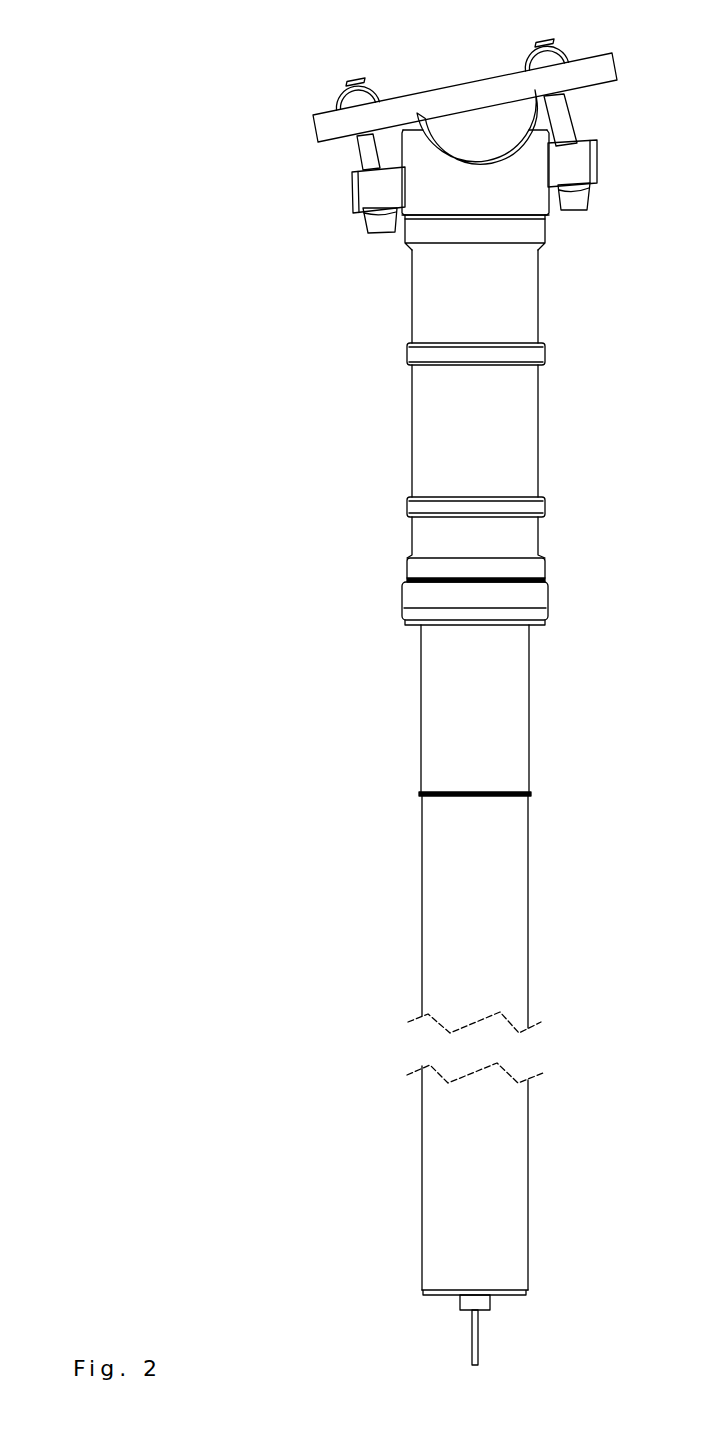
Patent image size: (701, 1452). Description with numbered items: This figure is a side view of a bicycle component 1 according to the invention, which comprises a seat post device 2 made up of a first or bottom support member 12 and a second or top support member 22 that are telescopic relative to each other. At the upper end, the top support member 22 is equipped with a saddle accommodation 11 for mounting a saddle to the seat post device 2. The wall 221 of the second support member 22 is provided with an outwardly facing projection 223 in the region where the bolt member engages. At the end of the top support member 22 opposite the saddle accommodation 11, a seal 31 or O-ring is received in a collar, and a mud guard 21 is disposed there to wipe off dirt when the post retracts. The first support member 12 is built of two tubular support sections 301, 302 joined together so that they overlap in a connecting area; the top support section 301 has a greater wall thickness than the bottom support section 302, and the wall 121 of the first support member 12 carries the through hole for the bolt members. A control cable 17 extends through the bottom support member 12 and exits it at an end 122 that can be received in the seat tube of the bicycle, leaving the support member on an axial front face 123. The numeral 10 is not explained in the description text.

The bicycle component 1 is at (112, 42).
The seat post device 2 is at (138, 118).
The seat post 10 is at (148, 200).
The saddle accommodation 11 is at (305, 100).
The first support member 12 is at (422, 850).
The wall 121 is at (450, 902).
The end 122 is at (395, 1278).
The axial front face 123 is at (447, 1302).
The control cable 17 is at (472, 1347).
The mud guard 21 is at (422, 627).
The second support member 22 is at (410, 410).
The wall 221 is at (422, 462).
The projection 223 is at (423, 353).
The seal 31 is at (423, 598).
The top support section 301 is at (420, 747).
The bottom support section 302 is at (422, 958).